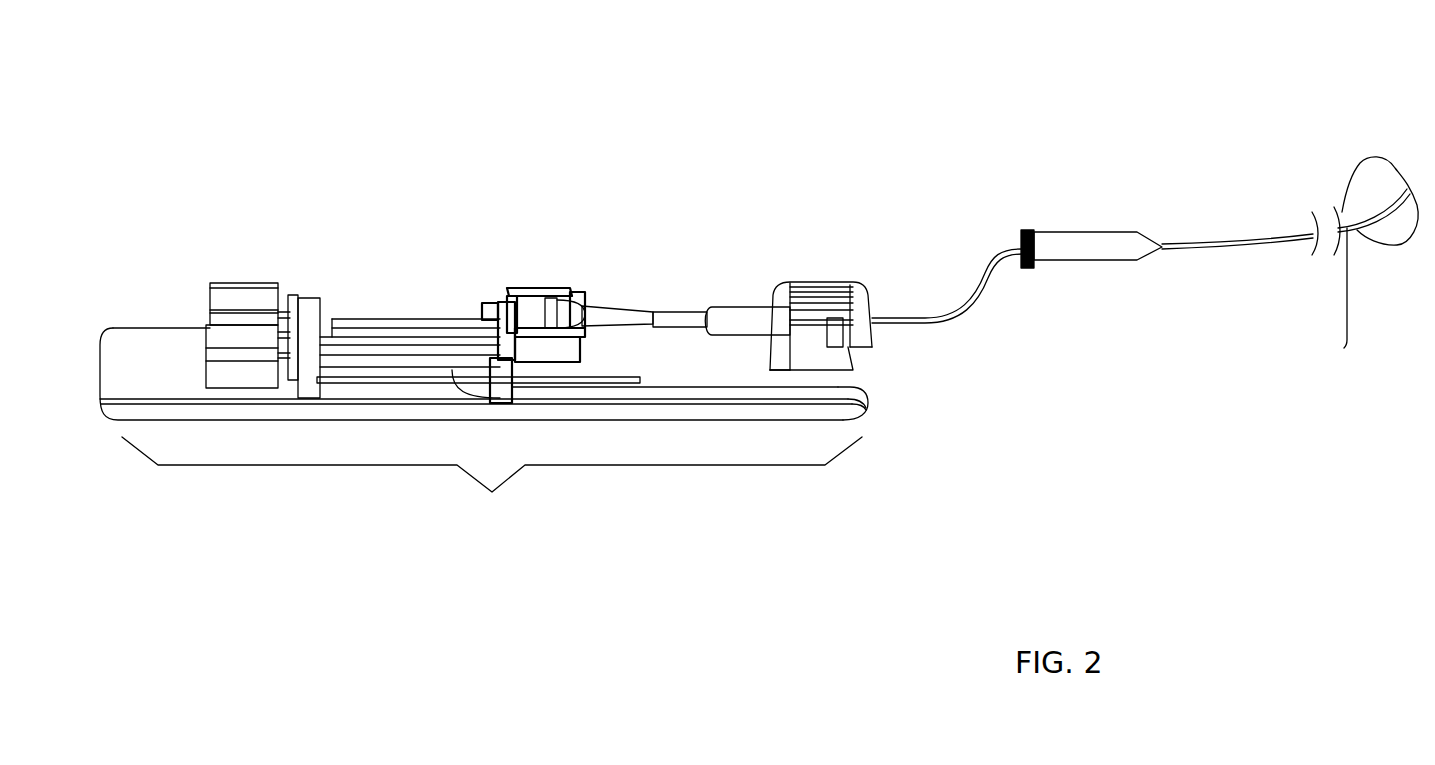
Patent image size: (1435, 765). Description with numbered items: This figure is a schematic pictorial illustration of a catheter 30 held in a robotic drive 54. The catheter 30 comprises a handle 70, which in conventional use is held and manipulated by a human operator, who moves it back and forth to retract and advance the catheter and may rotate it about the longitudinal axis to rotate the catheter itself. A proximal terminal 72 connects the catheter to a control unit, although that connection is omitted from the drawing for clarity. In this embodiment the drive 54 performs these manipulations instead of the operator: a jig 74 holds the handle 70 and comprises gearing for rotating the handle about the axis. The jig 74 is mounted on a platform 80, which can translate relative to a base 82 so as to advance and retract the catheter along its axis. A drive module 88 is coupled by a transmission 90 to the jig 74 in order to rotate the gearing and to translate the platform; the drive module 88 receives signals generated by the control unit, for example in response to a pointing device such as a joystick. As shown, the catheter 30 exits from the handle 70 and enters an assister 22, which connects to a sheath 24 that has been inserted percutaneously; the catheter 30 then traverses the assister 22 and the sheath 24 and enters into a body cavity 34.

The assister 22 is at (1073, 232).
The sheath 24 is at (1195, 238).
The catheter 30 is at (904, 318).
The cavity 34 is at (1375, 158).
The robotic drive 54 is at (492, 483).
The handle 70 is at (733, 303).
The proximal terminal 72 is at (558, 297).
The jig 74 is at (803, 280).
The platform 80 is at (870, 380).
The base 82 is at (103, 375).
The drive module 88 is at (253, 312).
The transmission 90 is at (360, 319).